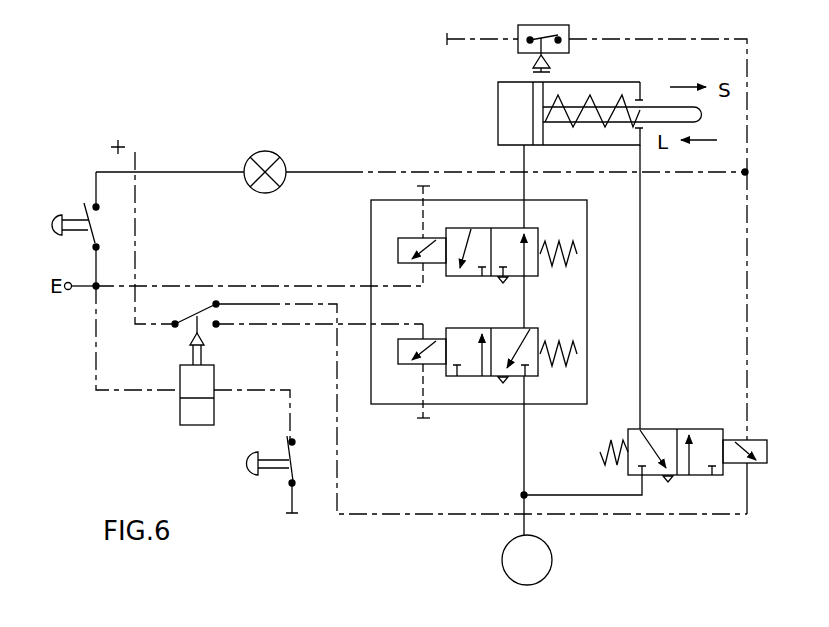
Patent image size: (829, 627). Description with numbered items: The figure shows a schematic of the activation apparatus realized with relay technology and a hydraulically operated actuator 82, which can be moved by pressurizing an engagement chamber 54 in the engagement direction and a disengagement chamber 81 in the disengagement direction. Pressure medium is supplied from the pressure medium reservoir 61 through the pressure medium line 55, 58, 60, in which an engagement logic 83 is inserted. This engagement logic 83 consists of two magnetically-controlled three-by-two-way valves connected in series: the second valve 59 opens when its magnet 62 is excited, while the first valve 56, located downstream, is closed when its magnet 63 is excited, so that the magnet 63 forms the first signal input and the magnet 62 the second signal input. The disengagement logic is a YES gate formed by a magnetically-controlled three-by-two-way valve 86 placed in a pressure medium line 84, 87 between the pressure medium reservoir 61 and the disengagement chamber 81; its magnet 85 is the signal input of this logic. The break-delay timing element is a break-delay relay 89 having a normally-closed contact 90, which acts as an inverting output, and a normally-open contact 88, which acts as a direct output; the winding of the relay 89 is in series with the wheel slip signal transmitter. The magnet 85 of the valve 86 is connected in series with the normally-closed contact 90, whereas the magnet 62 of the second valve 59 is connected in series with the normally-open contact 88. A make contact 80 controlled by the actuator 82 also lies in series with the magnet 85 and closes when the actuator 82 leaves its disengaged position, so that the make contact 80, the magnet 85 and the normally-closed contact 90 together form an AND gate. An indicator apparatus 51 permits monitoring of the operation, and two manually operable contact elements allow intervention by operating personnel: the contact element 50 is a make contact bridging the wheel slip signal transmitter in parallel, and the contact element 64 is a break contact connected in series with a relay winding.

The contact element 50 is at (73, 212).
The indicator apparatus 51 is at (251, 157).
The engagement chamber 54 is at (498, 100).
The pressure medium line 55 is at (526, 184).
The first 3/2-way valve 56 is at (539, 227).
The pressure medium line 58 is at (522, 300).
The second 3/2-way valve 59 is at (540, 326).
The pressure medium line 60 is at (522, 448).
The pressure medium reservoir 61 is at (503, 558).
The magnet 62 is at (413, 371).
The magnet 63 is at (411, 240).
The contact element 64 is at (272, 471).
The make contact 80 is at (525, 62).
The disengagement chamber 81 is at (612, 92).
The hydraulically operated actuator 82 is at (650, 91).
The engagement logic 83 is at (590, 276).
The pressure medium line 84 is at (641, 313).
The magnet 85 is at (754, 436).
The 3/2-way valve 86 is at (684, 427).
The pressure medium line 87 is at (581, 492).
The normally-open contact 88 is at (216, 332).
The break-delay relay 89 is at (177, 413).
The normally-closed contact 90 is at (188, 313).